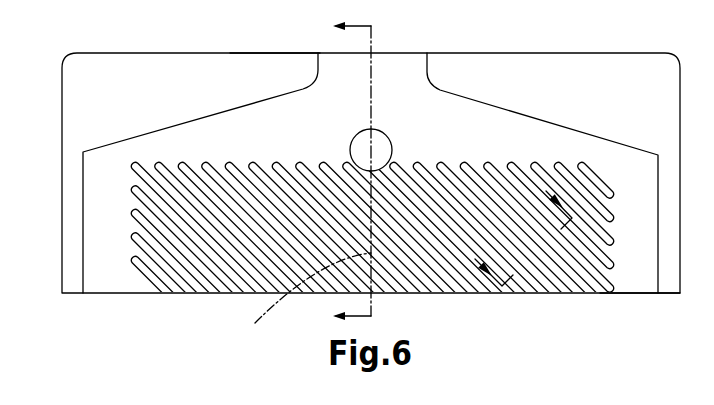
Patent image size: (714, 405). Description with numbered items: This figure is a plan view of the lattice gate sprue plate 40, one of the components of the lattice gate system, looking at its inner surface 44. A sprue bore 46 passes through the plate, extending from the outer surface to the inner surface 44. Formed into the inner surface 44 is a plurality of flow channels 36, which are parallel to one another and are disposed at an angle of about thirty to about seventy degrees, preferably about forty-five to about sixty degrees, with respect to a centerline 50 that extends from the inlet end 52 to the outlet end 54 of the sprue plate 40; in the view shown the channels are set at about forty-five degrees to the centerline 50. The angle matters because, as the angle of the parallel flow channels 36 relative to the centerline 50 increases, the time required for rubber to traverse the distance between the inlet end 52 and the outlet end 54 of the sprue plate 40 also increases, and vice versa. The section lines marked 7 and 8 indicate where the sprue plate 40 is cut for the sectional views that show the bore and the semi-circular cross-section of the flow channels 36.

The flow channels 36 is at (217, 270).
The lattice gate sprue plate 40 is at (462, 36).
The inner surface 44 is at (600, 82).
The sprue bore 46 is at (386, 129).
The centerline 50 is at (304, 302).
The inlet end 52 is at (277, 53).
The outlet end 54 is at (632, 294).
The section line 7- 7 is at (341, 172).
The section line 8- 8 is at (516, 228).